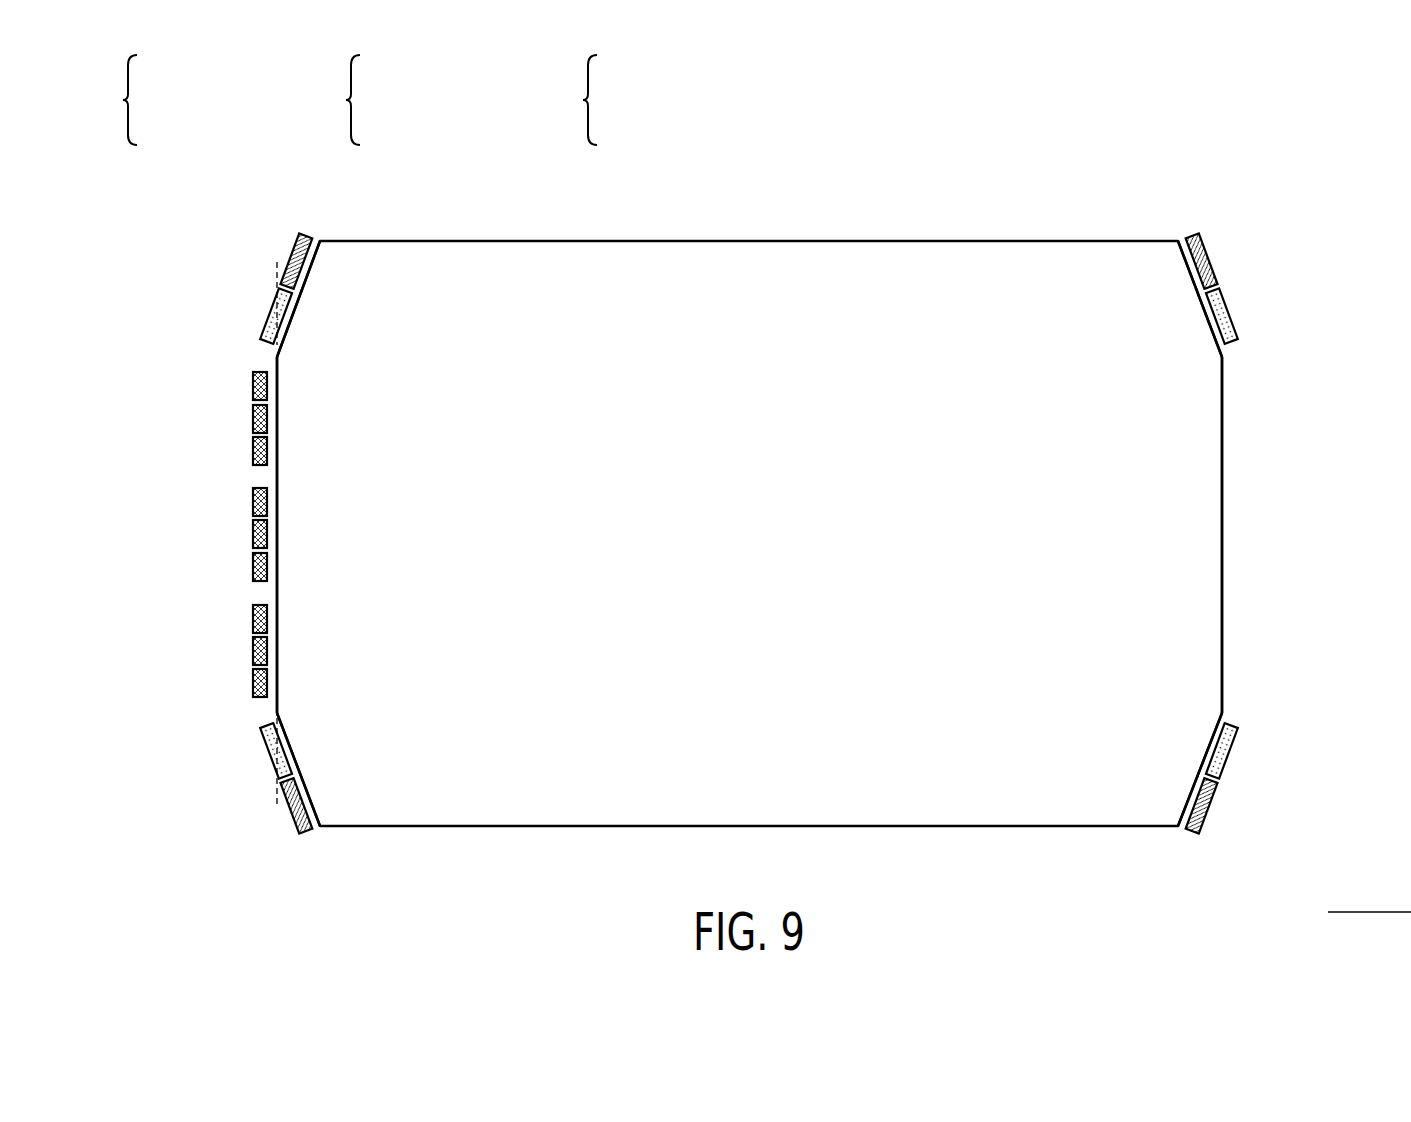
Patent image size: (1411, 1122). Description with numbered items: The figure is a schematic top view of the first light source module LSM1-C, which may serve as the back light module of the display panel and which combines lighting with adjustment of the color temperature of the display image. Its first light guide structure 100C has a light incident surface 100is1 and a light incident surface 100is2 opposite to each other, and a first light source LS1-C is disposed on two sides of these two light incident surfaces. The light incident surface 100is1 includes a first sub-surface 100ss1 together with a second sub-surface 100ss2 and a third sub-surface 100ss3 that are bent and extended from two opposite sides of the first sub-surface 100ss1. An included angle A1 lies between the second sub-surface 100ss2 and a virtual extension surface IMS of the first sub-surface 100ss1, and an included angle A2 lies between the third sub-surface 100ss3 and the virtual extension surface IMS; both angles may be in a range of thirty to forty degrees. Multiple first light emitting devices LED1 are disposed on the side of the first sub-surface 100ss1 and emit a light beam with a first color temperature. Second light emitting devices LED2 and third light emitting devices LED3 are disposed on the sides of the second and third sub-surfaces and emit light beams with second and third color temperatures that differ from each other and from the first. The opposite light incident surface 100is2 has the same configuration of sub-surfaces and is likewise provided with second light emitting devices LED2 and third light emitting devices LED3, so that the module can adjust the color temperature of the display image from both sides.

The light incident surface 100is1 is at (131, 100).
The light incident surface 100is2 is at (361, 100).
The first light source LS1-C is at (584, 100).
The first light guide structure 100C is at (1178, 484).
The first sub-surface 100ss1 is at (208, 535).
The second sub-surface 100ss2 is at (230, 288).
The third sub-surface 100ss3 is at (230, 782).
The first light emitting devices LED1 is at (256, 418).
The second light emitting devices LED2 is at (268, 325).
The third light emitting devices LED3 is at (303, 243).
The virtual extension surface IMS is at (277, 272).
The included angle A1 is at (283, 313).
The included angle A2 is at (283, 754).
The first light source module LSM1-C is at (1369, 895).